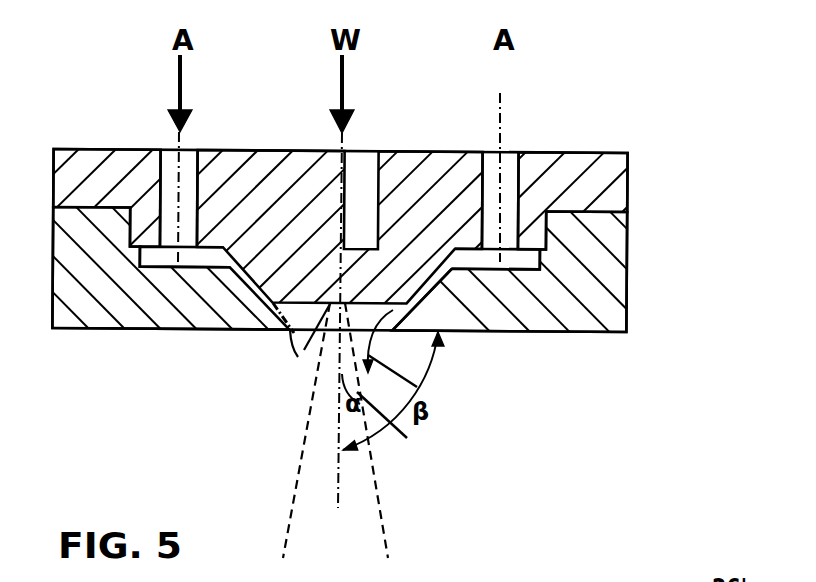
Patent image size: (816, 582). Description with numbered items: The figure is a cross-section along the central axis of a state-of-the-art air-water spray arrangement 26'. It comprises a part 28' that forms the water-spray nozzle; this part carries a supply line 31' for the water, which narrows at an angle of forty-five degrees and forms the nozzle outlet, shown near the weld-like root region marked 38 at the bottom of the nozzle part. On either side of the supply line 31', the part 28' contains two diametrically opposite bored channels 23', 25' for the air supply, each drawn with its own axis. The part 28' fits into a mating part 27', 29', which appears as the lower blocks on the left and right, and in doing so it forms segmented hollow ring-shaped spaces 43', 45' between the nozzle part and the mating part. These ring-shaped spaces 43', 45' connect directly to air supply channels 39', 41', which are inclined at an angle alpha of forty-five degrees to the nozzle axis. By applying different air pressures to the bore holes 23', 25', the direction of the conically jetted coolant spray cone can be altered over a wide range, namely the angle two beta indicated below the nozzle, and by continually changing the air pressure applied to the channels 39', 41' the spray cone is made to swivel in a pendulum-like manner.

The bored channel 23' is at (202, 171).
The bored channel 25' is at (523, 173).
The air-water spray arrangement 26' is at (378, 166).
The mating part 27' is at (145, 274).
The part forming the water-spray nozzle 28' is at (555, 167).
The mating part 29' is at (549, 306).
The supply line 31' is at (321, 194).
The weld root 38 is at (297, 362).
The air supply channel 39' is at (248, 351).
The air supply channel 41' is at (448, 335).
The segmented hollow ring-shaped space 43' is at (158, 324).
The segmented hollow ring-shaped space 45' is at (530, 326).